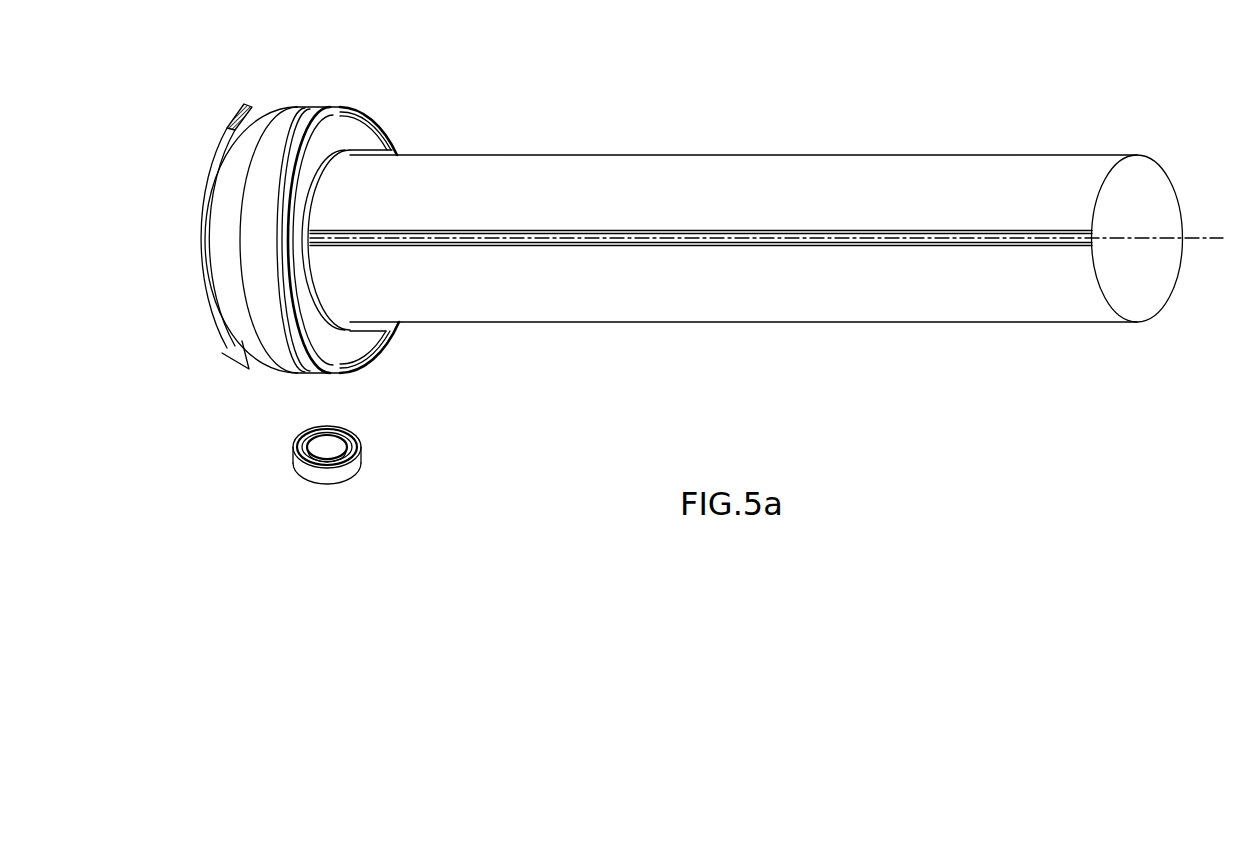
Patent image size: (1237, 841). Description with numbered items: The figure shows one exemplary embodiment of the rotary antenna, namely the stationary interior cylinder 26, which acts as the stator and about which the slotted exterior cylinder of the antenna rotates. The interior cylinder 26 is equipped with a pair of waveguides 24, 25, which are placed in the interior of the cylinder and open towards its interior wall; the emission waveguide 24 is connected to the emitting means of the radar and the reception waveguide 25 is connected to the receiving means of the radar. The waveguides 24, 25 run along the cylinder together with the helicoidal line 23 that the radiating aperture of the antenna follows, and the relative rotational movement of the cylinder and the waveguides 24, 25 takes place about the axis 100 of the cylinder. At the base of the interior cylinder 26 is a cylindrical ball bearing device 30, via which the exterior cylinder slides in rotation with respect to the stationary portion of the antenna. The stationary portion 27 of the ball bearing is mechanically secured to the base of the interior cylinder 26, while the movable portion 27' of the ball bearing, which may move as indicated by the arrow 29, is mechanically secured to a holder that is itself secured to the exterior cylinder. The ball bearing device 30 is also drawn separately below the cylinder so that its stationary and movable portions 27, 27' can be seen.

The stationary interior cylinder 26 is at (522, 155).
The helicoidal line 23 is at (817, 238).
The emission waveguide 24 is at (727, 230).
The reception waveguide 25 is at (827, 247).
The axis of the cylinder 100 is at (1202, 238).
The movable portion of the ball bearing 27' is at (272, 211).
The stationary portion of the ball bearing 27 is at (375, 234).
The cylindrical ball bearing device 30 is at (355, 106).
The arrow 29 is at (203, 222).